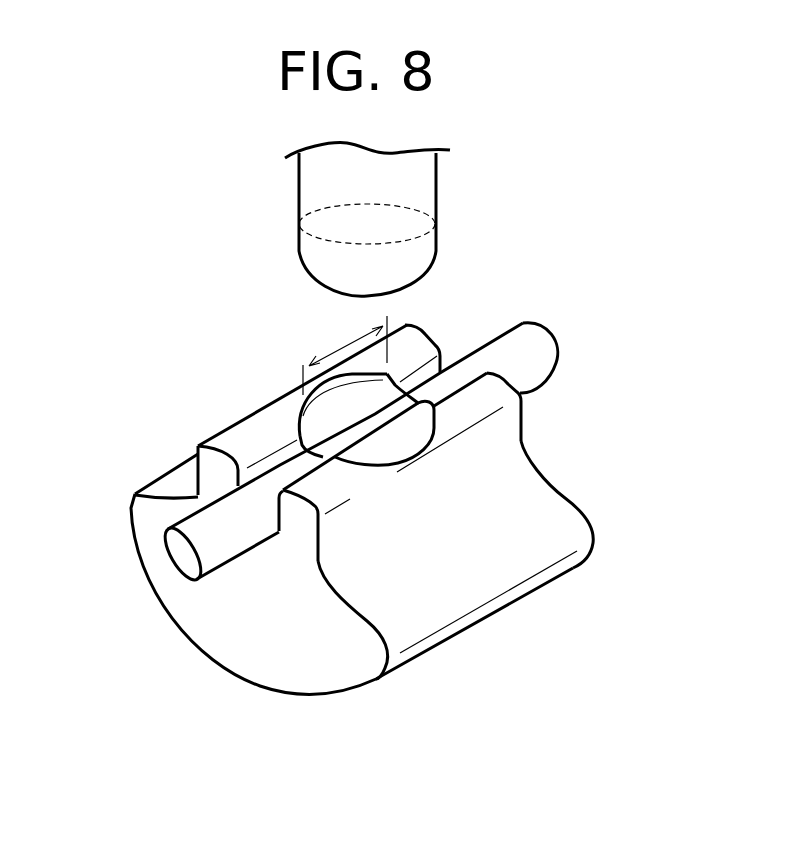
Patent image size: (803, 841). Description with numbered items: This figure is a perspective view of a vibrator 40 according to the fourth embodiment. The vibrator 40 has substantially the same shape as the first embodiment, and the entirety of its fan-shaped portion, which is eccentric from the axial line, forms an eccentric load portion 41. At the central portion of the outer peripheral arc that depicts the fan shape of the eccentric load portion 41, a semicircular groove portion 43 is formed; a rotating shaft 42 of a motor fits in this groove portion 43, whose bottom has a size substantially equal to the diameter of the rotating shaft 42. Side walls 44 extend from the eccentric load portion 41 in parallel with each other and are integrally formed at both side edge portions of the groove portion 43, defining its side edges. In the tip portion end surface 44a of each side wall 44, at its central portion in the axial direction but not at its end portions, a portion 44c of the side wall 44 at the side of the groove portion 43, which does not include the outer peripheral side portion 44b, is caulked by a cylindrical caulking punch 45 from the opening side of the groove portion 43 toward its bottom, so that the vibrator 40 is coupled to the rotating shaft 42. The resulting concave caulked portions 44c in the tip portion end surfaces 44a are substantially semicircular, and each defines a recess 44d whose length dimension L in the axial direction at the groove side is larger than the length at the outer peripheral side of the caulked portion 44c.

The vibrator 40 is at (582, 467).
The eccentric load portion 41 is at (463, 592).
The rotating shaft 42 is at (543, 350).
The groove portion 43 is at (262, 523).
The side wall 44 is at (210, 468).
The tip portion end surface 44a is at (243, 433).
The outer peripheral side portion 44b is at (302, 380).
The caulked portion 44c is at (435, 335).
The recess 44d is at (340, 418).
The cylindrical caulking punch 45 is at (428, 197).
The length dimension L is at (345, 355).